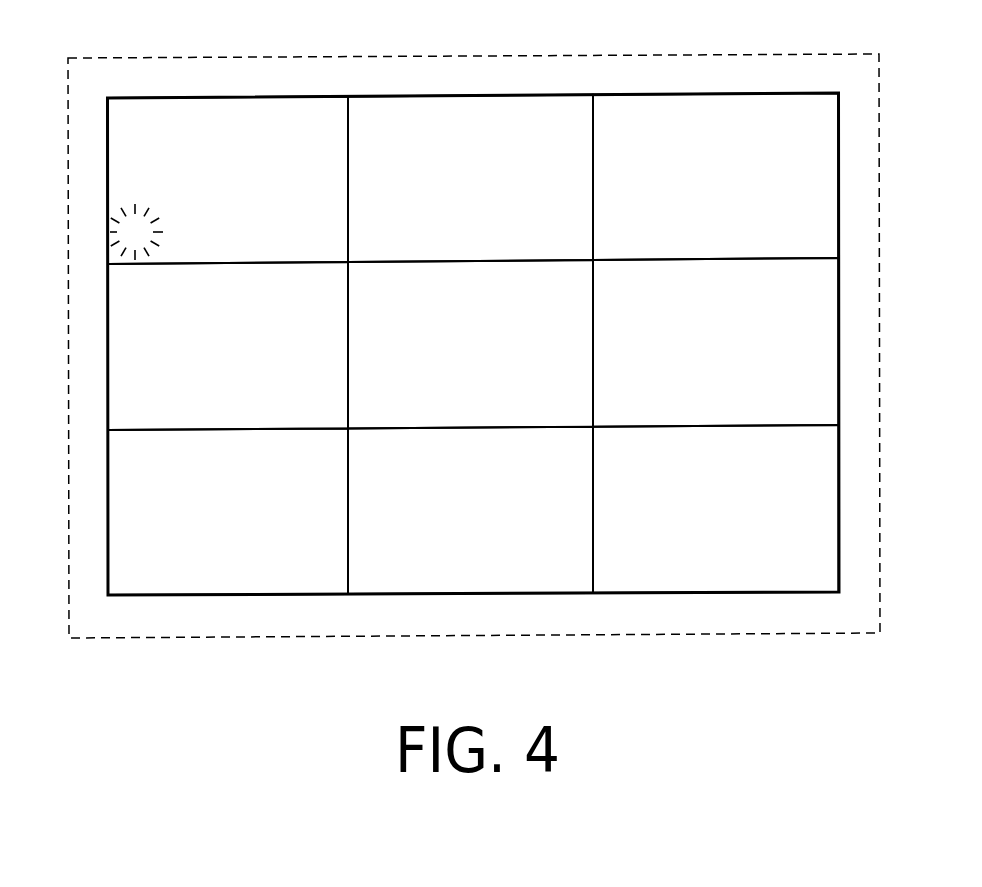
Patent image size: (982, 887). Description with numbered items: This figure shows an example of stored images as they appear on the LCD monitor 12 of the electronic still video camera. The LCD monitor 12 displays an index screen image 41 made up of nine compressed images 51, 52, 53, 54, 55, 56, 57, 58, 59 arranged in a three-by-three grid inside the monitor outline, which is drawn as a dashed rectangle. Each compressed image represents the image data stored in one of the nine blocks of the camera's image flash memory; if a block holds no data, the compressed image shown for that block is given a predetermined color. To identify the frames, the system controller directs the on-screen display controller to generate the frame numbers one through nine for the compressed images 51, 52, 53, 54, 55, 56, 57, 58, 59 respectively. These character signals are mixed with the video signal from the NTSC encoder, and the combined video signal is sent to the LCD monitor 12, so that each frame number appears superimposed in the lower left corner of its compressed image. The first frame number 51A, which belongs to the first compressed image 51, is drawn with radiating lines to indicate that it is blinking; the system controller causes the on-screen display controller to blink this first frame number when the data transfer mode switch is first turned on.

The LCD monitor 12 is at (880, 527).
The index screen image 41 is at (731, 78).
The compressed image 51 is at (227, 125).
The first frame number 51A is at (123, 230).
The compressed image 52 is at (453, 117).
The compressed image 53 is at (815, 192).
The compressed image 54 is at (123, 342).
The compressed image 55 is at (467, 408).
The compressed image 56 is at (815, 348).
The compressed image 57 is at (123, 500).
The compressed image 58 is at (527, 563).
The compressed image 59 is at (713, 578).